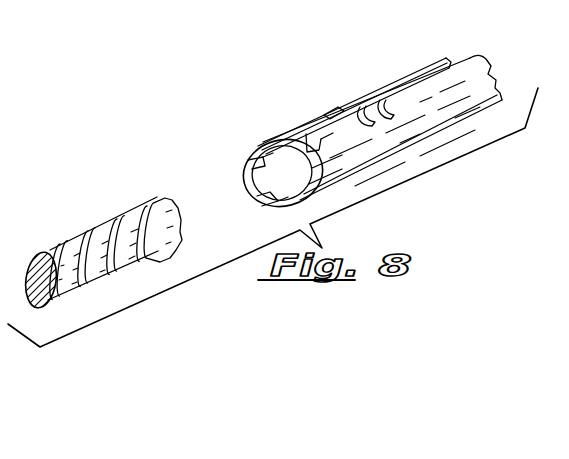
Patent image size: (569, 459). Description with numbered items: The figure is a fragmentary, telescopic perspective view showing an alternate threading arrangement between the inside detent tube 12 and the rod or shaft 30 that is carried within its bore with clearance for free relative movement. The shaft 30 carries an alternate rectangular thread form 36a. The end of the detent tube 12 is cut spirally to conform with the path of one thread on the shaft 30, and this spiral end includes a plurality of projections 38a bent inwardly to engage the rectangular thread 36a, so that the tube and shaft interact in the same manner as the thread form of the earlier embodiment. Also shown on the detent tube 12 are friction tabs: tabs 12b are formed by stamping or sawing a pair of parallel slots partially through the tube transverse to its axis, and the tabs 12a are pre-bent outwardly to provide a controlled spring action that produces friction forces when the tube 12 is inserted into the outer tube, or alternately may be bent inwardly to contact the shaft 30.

The inside detent tube 12 is at (480, 84).
The tabs 12a is at (397, 86).
The tabs 12b is at (365, 110).
The rod or shaft 30 is at (70, 236).
The rectangular thread form 36a is at (150, 199).
The projections 38a is at (306, 140).